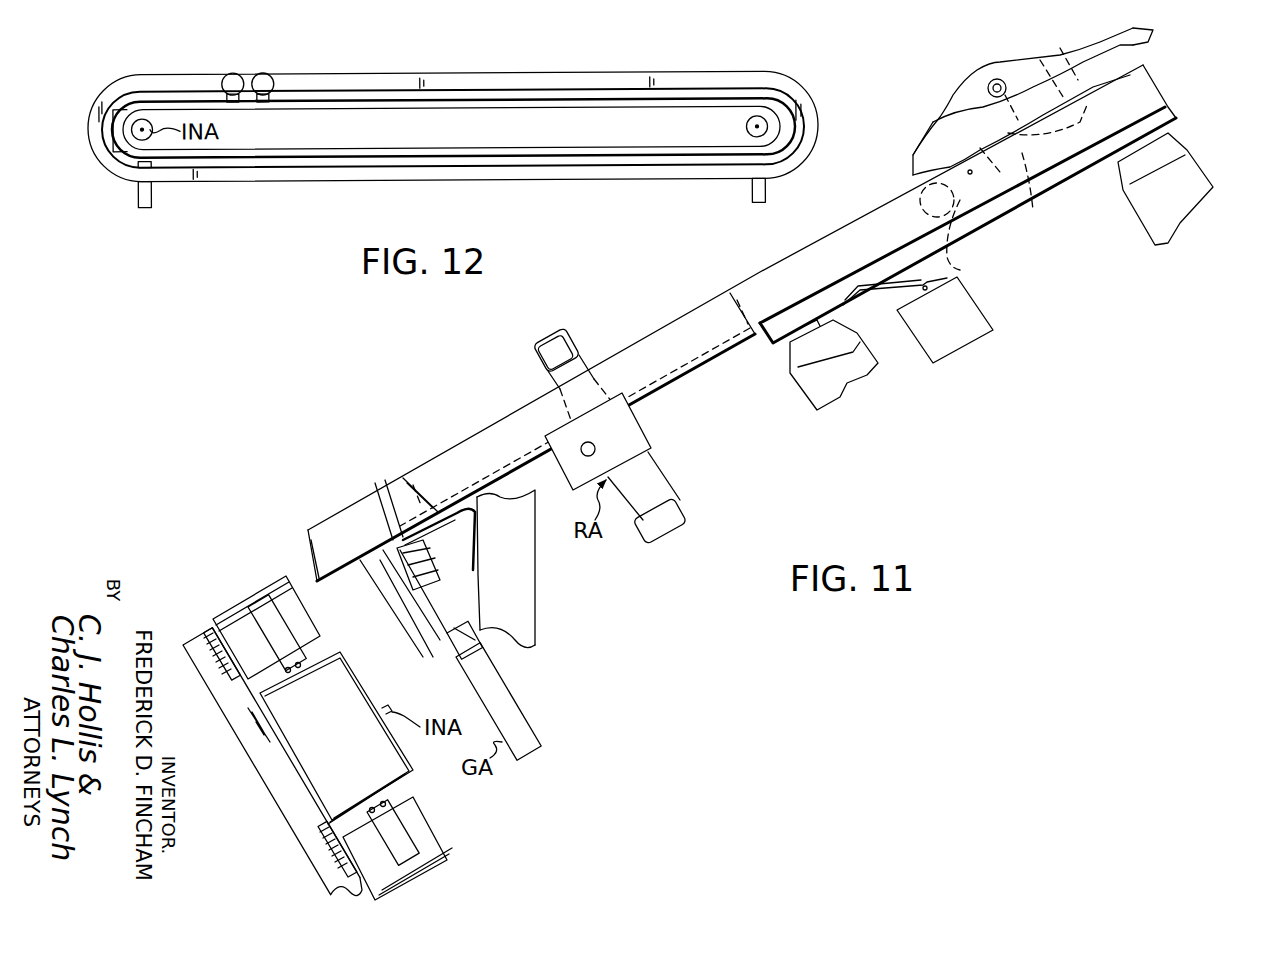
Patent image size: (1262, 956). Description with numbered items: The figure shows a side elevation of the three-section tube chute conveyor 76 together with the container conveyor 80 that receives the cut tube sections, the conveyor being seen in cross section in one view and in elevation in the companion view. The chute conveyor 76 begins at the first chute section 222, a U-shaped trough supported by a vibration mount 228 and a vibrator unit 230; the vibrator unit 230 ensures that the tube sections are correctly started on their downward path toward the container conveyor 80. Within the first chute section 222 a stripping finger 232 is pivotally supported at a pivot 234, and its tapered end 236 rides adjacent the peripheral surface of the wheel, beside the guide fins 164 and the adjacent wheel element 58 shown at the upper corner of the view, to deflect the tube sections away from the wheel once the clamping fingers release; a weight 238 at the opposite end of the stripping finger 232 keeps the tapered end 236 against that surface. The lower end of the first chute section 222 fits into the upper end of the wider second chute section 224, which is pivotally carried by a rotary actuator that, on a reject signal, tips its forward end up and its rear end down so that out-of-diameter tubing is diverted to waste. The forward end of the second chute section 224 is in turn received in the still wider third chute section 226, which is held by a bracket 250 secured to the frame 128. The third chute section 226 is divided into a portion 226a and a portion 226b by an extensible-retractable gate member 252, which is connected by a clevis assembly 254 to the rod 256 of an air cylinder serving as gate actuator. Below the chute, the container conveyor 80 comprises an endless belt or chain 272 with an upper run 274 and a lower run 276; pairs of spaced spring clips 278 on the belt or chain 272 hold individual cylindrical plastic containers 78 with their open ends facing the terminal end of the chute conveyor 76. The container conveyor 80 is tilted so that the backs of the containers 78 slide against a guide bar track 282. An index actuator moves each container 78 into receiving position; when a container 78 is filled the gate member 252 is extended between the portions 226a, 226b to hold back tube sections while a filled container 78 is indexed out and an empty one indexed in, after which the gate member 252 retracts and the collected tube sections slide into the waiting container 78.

In FIG. 11, the hook tab 58 is at (1153, 34).
In FIG. 11, the guide fins 164 is at (1140, 47).
In FIG. 11, the first chute section 222 is at (1168, 88).
In FIG. 11, the second chute section 224 is at (660, 332).
In FIG. 11, the third chute section 226 is at (336, 506).
In FIG. 11, the portion of third chute section 226a is at (393, 492).
In FIG. 11, the portion of third chute section 226b is at (308, 533).
In FIG. 11, the vibration mount 228 is at (1153, 238).
In FIG. 11, the vibrator unit 230 is at (968, 323).
In FIG. 11, the stripping finger 232 is at (1033, 198).
In FIG. 11, the pivot 234 is at (970, 175).
In FIG. 11, the tapered end 236 is at (1062, 115).
In FIG. 11, the weight 238 is at (953, 272).
In FIG. 11, the bracket 250 is at (462, 513).
In FIG. 11, the gate member 252 is at (375, 485).
In FIG. 11, the clevis assembly 254 is at (463, 622).
In FIG. 11, the rod 256 is at (490, 650).
In FIG. 11, the frame 128 is at (537, 605).
In FIG. 11, the tube chute conveyor 76 is at (888, 182).
In FIG. 12, the containers 78 is at (267, 74).
In FIG. 11, the containers 78 is at (210, 620).
In FIG. 12, the container conveyor 80 is at (292, 182).
In FIG. 11, the container conveyor 80 is at (340, 723).
In FIG. 12, the endless belt or chain 272 is at (618, 92).
In FIG. 11, the endless belt or chain 272 is at (325, 835).
In FIG. 12, the upper run 274 is at (518, 90).
In FIG. 12, the lower run 276 is at (578, 158).
In FIG. 12, the spring clips 278 is at (226, 74).
In FIG. 11, the spring clips 278 is at (248, 602).
In FIG. 12, the guide bar track 282 is at (150, 76).
In FIG. 11, the guide bar track 282 is at (212, 627).